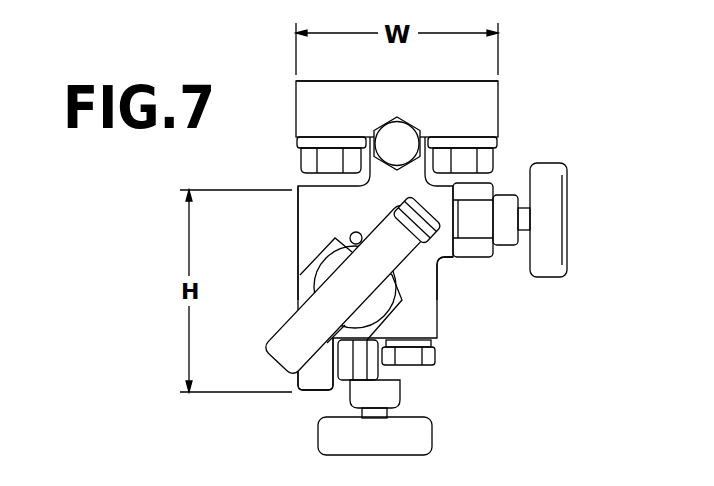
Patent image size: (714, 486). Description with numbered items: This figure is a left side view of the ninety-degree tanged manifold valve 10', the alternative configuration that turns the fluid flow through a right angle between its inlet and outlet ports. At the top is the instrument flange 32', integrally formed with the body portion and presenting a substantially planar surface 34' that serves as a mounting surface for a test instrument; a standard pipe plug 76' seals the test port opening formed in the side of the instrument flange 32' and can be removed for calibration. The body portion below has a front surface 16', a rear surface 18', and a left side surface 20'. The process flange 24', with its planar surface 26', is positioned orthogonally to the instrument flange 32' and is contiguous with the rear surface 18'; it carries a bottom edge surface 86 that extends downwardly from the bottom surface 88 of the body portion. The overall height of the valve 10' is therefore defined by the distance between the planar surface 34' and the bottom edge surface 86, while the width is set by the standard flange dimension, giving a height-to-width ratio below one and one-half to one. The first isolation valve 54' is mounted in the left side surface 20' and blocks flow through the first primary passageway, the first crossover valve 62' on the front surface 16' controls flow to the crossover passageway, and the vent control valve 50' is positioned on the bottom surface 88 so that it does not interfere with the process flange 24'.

The 90° tanged manifold valve 10' is at (75, 314).
The front surface 16' is at (467, 278).
The rear surface 18' is at (300, 163).
The left side surface 20' is at (375, 263).
The process flange 24' is at (274, 266).
The planar surface 26' is at (261, 213).
The instrument flange 32' is at (426, 109).
The planar surface 34' is at (397, 63).
The vent control valve 50' is at (402, 415).
The first isolation valve 54' is at (398, 287).
The first crossover valve 62' is at (537, 220).
The pipe plug 76' is at (377, 111).
The bottom edge surface 86 is at (315, 392).
The bottom surface 88 is at (368, 357).